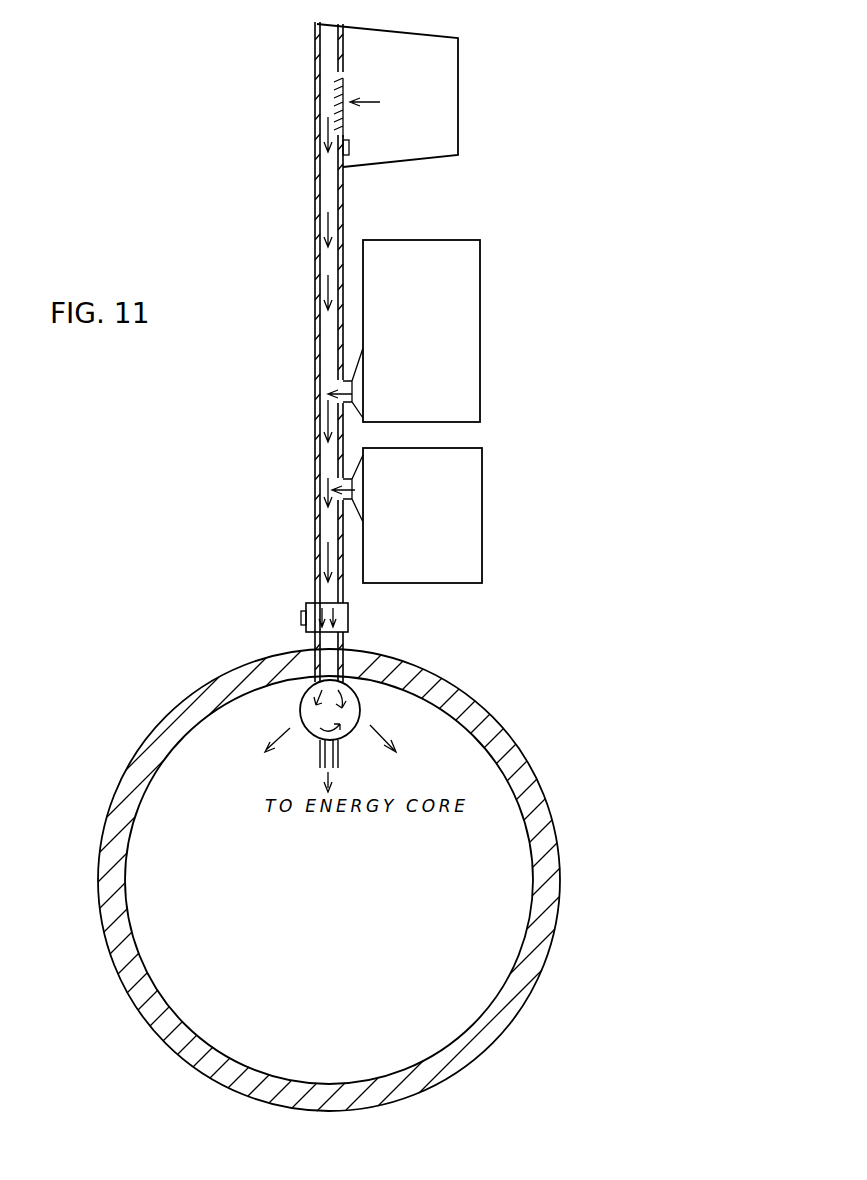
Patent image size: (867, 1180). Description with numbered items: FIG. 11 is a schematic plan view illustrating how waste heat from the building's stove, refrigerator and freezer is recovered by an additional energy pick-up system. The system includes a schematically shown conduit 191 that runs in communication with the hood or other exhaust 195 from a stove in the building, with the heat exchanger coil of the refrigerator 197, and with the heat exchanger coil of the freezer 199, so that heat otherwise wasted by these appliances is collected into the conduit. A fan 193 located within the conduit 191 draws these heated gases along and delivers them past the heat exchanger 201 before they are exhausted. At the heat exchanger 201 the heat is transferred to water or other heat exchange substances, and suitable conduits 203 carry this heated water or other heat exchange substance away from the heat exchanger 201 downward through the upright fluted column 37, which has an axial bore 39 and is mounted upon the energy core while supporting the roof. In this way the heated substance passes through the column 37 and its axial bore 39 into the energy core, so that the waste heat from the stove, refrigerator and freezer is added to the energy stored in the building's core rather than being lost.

The conduit 191 is at (326, 255).
The fan 193 is at (306, 621).
The hood or other exhaust 195 is at (458, 44).
The heat exchanger coil of the refrigerator 197 is at (462, 388).
The heat exchanger coil of freezer 199 is at (462, 497).
The heat exchanger 201 is at (338, 710).
The conduits 203 is at (340, 757).
The upright fluted column 37 is at (545, 823).
The axial bore 39 is at (495, 918).